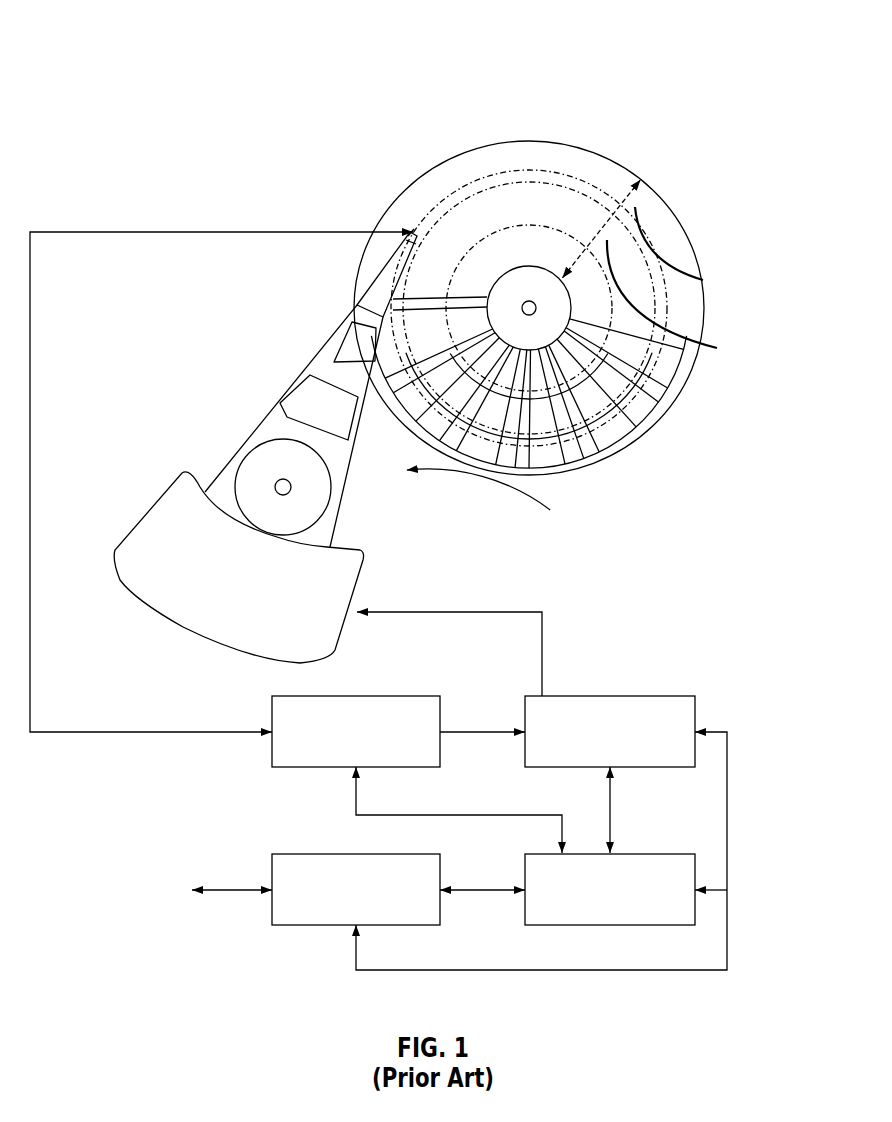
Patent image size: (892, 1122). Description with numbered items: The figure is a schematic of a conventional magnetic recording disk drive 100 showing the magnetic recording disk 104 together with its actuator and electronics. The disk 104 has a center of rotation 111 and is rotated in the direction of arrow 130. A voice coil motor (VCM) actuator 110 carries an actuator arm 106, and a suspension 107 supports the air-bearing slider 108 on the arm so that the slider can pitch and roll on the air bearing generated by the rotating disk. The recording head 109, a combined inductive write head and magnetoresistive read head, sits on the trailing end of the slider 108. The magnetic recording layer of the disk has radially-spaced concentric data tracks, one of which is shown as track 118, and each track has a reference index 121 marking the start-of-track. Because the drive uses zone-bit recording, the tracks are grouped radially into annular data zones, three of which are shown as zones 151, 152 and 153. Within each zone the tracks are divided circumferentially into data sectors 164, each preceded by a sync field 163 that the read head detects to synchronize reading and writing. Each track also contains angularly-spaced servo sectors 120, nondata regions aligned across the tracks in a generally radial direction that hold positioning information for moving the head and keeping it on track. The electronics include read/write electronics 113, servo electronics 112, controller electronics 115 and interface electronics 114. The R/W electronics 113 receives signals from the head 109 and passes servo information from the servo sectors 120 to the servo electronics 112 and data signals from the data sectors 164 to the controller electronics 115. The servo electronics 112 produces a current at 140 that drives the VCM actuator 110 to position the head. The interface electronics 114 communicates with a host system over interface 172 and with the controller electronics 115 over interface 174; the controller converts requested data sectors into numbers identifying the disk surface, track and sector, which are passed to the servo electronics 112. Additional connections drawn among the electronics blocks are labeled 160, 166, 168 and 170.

The disk drive 100 is at (132, 78).
The magnetic recording disk 104 is at (487, 146).
The actuator arm 106 is at (340, 337).
The suspension 107 is at (385, 292).
The air-bearing slider 108 is at (412, 231).
The recording head 109 is at (414, 229).
The voice coil motor actuator 110 is at (178, 484).
The center of rotation 111 is at (527, 300).
The servo electronics 112 is at (675, 697).
The read/write electronics 113 is at (418, 697).
The interface electronics 114 is at (297, 853).
The controller electronics 115 is at (549, 925).
The data track 118 is at (605, 164).
The servo sectors 120 is at (441, 459).
The reference index 121 is at (678, 393).
The direction of rotation 130 is at (546, 514).
The current 140 is at (545, 634).
The data zone 151 is at (701, 281).
The data zone 152 is at (706, 348).
The data zone 153 is at (576, 262).
The servo-controller signal path 160 is at (611, 815).
The sync fields 163 is at (411, 401).
The data sectors 164 is at (433, 430).
The read signal path 166 is at (492, 740).
The R/W-controller signal path 168 is at (513, 815).
The controller-servo signal path 170 is at (727, 820).
The interface 172 is at (207, 890).
The interface 174 is at (485, 888).